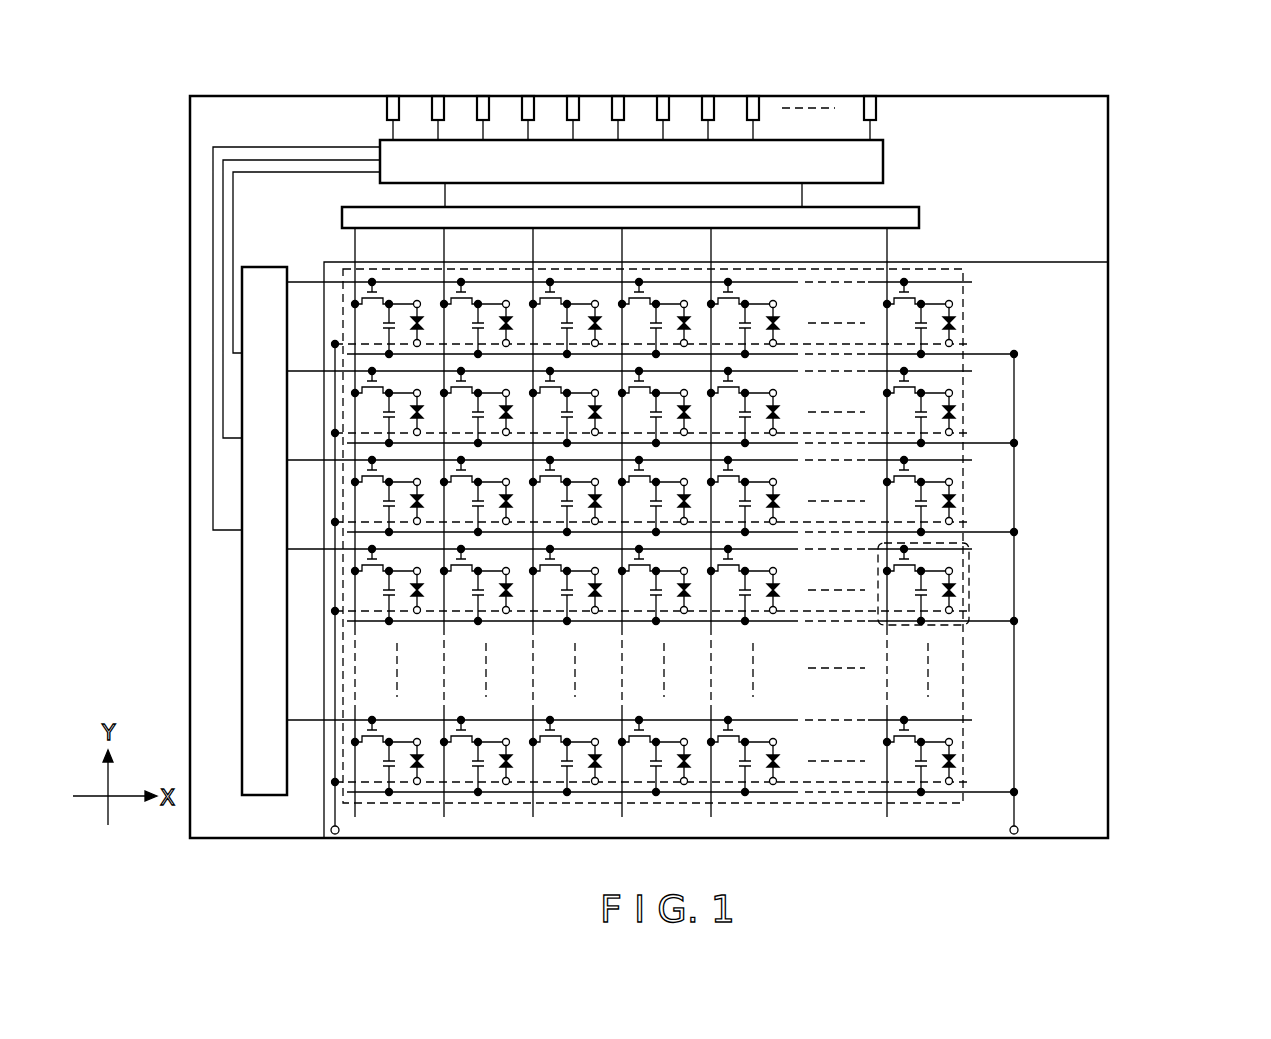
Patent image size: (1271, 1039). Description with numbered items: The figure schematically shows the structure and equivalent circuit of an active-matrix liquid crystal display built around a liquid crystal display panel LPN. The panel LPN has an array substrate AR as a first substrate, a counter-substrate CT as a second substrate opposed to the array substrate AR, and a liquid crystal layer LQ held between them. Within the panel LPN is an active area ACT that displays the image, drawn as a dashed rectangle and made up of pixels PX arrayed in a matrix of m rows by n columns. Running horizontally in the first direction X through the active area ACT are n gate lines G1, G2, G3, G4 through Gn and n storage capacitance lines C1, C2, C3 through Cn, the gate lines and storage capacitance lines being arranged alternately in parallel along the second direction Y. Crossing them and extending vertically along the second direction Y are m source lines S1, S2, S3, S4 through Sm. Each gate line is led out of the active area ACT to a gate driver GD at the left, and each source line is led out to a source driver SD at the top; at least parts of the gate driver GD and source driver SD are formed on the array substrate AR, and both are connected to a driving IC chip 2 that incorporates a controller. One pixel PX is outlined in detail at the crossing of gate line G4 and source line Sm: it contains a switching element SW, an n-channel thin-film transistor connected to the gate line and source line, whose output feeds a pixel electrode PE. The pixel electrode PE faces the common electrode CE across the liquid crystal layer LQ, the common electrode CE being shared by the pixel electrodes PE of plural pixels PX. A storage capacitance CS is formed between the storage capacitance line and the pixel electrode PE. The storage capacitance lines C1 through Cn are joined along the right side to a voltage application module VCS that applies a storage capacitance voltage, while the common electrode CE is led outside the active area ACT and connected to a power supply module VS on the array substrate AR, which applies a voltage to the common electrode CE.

The liquid crystal display panel LPN is at (1145, 112).
The driving IC chip 2 is at (883, 140).
The source driver SD is at (921, 216).
The gate driver GD is at (242, 650).
The counter-substrate CT is at (1075, 262).
The active area ACT is at (963, 385).
The array substrate AR is at (258, 826).
The gate line G1 is at (302, 281).
The gate line G2 is at (302, 370).
The gate line G3 is at (302, 459).
The gate line G4 is at (302, 548).
The gate line Gn is at (302, 719).
The source line S1 is at (360, 250).
The source line S2 is at (449, 250).
The source line S3 is at (538, 250).
The source line S4 is at (627, 250).
The source line Sm is at (890, 250).
The storage capacitance line C1 is at (990, 353).
The storage capacitance line C2 is at (990, 442).
The storage capacitance line C3 is at (990, 531).
The storage capacitance line Cn is at (990, 791).
The pixel PX is at (965, 636).
The switching element SW is at (882, 565).
The storage capacitance CS is at (896, 599).
The pixel electrode PE is at (952, 570).
The liquid crystal layer LQ is at (953, 590).
The common electrode CE is at (953, 609).
The power supply module VS is at (338, 834).
The voltage application module VCS is at (1018, 827).